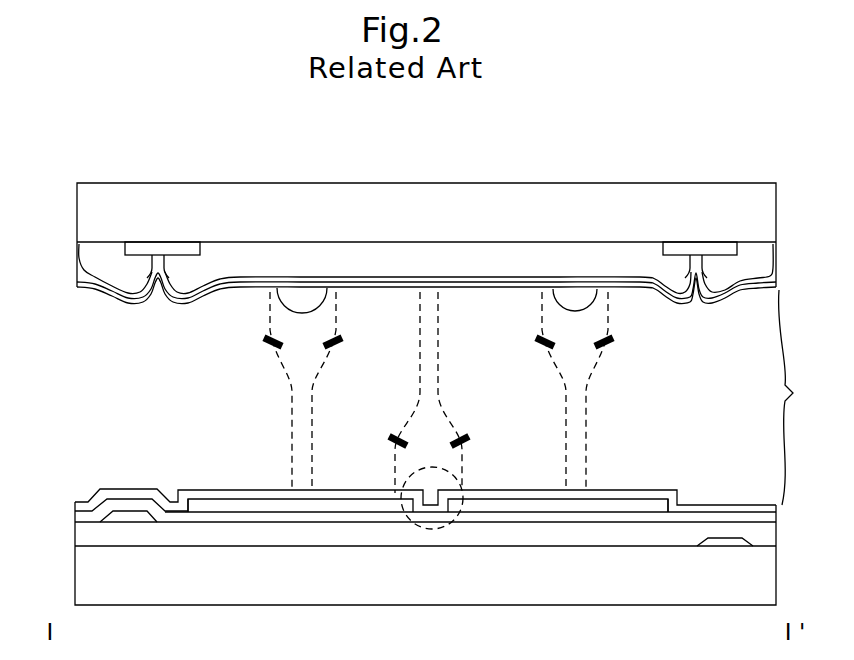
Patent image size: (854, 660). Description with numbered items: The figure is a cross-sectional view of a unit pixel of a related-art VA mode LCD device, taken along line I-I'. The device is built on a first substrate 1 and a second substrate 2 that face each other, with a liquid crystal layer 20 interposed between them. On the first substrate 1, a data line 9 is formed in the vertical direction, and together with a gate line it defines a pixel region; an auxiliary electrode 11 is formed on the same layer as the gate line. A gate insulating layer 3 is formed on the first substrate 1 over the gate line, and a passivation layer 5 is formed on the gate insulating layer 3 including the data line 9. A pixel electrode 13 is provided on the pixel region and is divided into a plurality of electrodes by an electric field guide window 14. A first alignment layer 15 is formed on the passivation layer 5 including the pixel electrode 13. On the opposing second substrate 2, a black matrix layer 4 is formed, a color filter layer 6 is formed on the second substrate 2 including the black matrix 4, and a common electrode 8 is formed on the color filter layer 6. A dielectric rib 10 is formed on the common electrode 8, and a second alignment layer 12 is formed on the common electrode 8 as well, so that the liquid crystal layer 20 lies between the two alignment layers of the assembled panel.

The first substrate 1 is at (765, 588).
The second substrate 2 is at (765, 194).
The gate insulating layer 3 is at (767, 532).
The black matrix layer 4 is at (712, 248).
The passivation layer 5 is at (75, 518).
The color filter layer 6 is at (588, 262).
The common electrode 8 is at (737, 290).
The data line 9 is at (122, 518).
The dielectric rib 10 is at (302, 297).
The auxiliary electrode 11 is at (753, 545).
The second alignment layer 12 is at (133, 300).
The pixel electrode 13 is at (207, 506).
The electric field guide window 14 is at (428, 530).
The first alignment layer 15 is at (128, 490).
The liquid crystal layer 20 is at (803, 397).